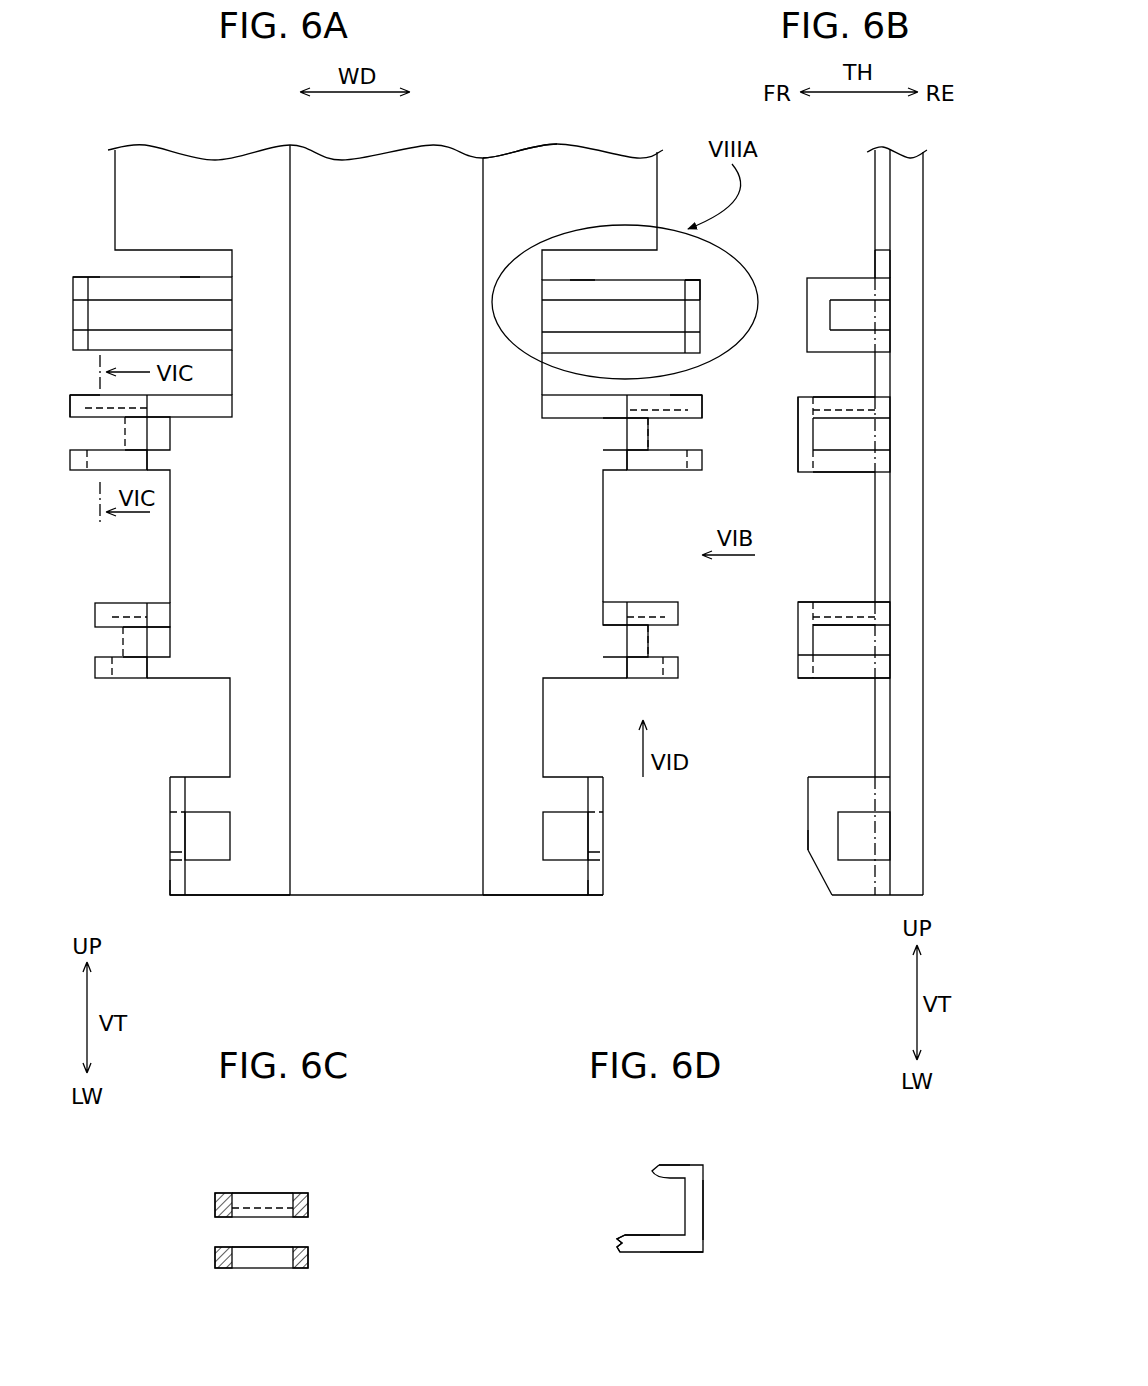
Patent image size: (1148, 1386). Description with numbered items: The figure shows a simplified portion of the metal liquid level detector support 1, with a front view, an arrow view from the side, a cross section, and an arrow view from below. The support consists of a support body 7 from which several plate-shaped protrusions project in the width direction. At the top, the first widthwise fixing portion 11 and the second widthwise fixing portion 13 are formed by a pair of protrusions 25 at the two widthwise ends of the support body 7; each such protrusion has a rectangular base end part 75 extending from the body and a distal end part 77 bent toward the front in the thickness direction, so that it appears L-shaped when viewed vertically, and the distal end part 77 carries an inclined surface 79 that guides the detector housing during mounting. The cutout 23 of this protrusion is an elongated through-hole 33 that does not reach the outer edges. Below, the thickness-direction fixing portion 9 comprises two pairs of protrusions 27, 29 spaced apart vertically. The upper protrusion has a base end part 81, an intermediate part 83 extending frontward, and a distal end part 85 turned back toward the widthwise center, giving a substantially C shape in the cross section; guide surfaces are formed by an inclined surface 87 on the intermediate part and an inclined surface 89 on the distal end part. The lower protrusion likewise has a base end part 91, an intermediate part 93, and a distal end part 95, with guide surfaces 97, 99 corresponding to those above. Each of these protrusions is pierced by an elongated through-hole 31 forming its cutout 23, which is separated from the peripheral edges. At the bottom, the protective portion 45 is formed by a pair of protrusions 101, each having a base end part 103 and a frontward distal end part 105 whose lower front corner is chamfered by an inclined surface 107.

In FIG. 6A, the liquid level detector support 1 is at (544, 140).
In FIG. 6A, the support body 7 is at (288, 895).
In FIG. 6B, the support body 7 is at (879, 521).
In FIG. 6D, the support body 7 is at (625, 1243).
In FIG. 6A, the thickness-direction fixing portion 9 is at (69, 413).
In FIG. 6B, the thickness-direction fixing portion 9 is at (822, 600).
In FIG. 6C, the thickness-direction fixing portion 9 is at (301, 1189).
In FIG. 6D, the thickness-direction fixing portion 9 is at (693, 1158).
In FIG. 6A, the first widthwise fixing portion 11 is at (72, 308).
In FIG. 6A, the second widthwise fixing portion 13 is at (689, 267).
In FIG. 6A, the cutout 23 is at (412, 391).
In FIG. 6B, the cutout 23 is at (817, 463).
In FIG. 6C, the cutout 23 is at (256, 1288).
In FIG. 6A, the pair of protrusions 25 is at (553, 278).
In FIG. 6B, the pair of protrusions 25 is at (823, 278).
In FIG. 6A, the protrusions 27 is at (374, 502).
In FIG. 6B, the protrusions 27 is at (812, 400).
In FIG. 6C, the protrusions 27 is at (215, 1258).
In FIG. 6A, the protrusions 29 is at (116, 679).
In FIG. 6B, the protrusions 29 is at (830, 678).
In FIG. 6D, the protrusions 29 is at (690, 1252).
In FIG. 6A, the through-hole 31 is at (412, 556).
In FIG. 6B, the through-hole 31 is at (817, 537).
In FIG. 6C, the through-hole 31 is at (243, 1232).
In FIG. 6A, the through-hole 33 is at (386, 220).
In FIG. 6B, the through-hole 33 is at (821, 300).
In FIG. 6A, the protective portion 45 is at (170, 878).
In FIG. 6B, the protective portion 45 is at (808, 822).
In FIG. 6A, the base end part 75 is at (193, 277).
In FIG. 6A, the distal end part 77 is at (73, 343).
In FIG. 6B, the distal end part 77 is at (857, 278).
In FIG. 6A, the inclined surface 79 is at (88, 297).
In FIG. 6A, the base end part 81 is at (152, 460).
In FIG. 6C, the base end part 81 is at (308, 1258).
In FIG. 6A, the intermediate part 83 is at (71, 406).
In FIG. 6B, the intermediate part 83 is at (823, 475).
In FIG. 6C, the intermediate part 83 is at (290, 1268).
In FIG. 6A, the distal end part 85 is at (105, 460).
In FIG. 6B, the distal end part 85 is at (798, 419).
In FIG. 6C, the distal end part 85 is at (215, 1205).
In FIG. 6A, the inclined surface 87 is at (92, 396).
In FIG. 6B, the inclined surface 87 is at (835, 398).
In FIG. 6C, the inclined surface 87 is at (273, 1193).
In FIG. 6A, the inclined surface 89 is at (150, 405).
In FIG. 6B, the inclined surface 89 is at (827, 420).
In FIG. 6C, the inclined surface 89 is at (233, 1193).
In FIG. 6A, the base end part 91 is at (170, 596).
In FIG. 6D, the base end part 91 is at (643, 1252).
In FIG. 6A, the intermediate part 93 is at (95, 614).
In FIG. 6B, the intermediate part 93 is at (852, 602).
In FIG. 6D, the intermediate part 93 is at (706, 1211).
In FIG. 6A, the distal end part 95 is at (136, 679).
In FIG. 6B, the distal end part 95 is at (797, 672).
In FIG. 6D, the distal end part 95 is at (672, 1165).
In FIG. 6A, the guide surface 97 is at (111, 604).
In FIG. 6B, the guide surface 97 is at (857, 608).
In FIG. 6A, the guide surface 99 is at (150, 618).
In FIG. 6B, the guide surface 99 is at (818, 630).
In FIG. 6A, the protrusions 101 is at (170, 830).
In FIG. 6B, the protrusions 101 is at (850, 897).
In FIG. 6A, the base end part 103 is at (236, 895).
In FIG. 6A, the distal end part 105 is at (170, 797).
In FIG. 6B, the distal end part 105 is at (828, 776).
In FIG. 6A, the inclined surface 107 is at (180, 895).
In FIG. 6B, the inclined surface 107 is at (822, 880).